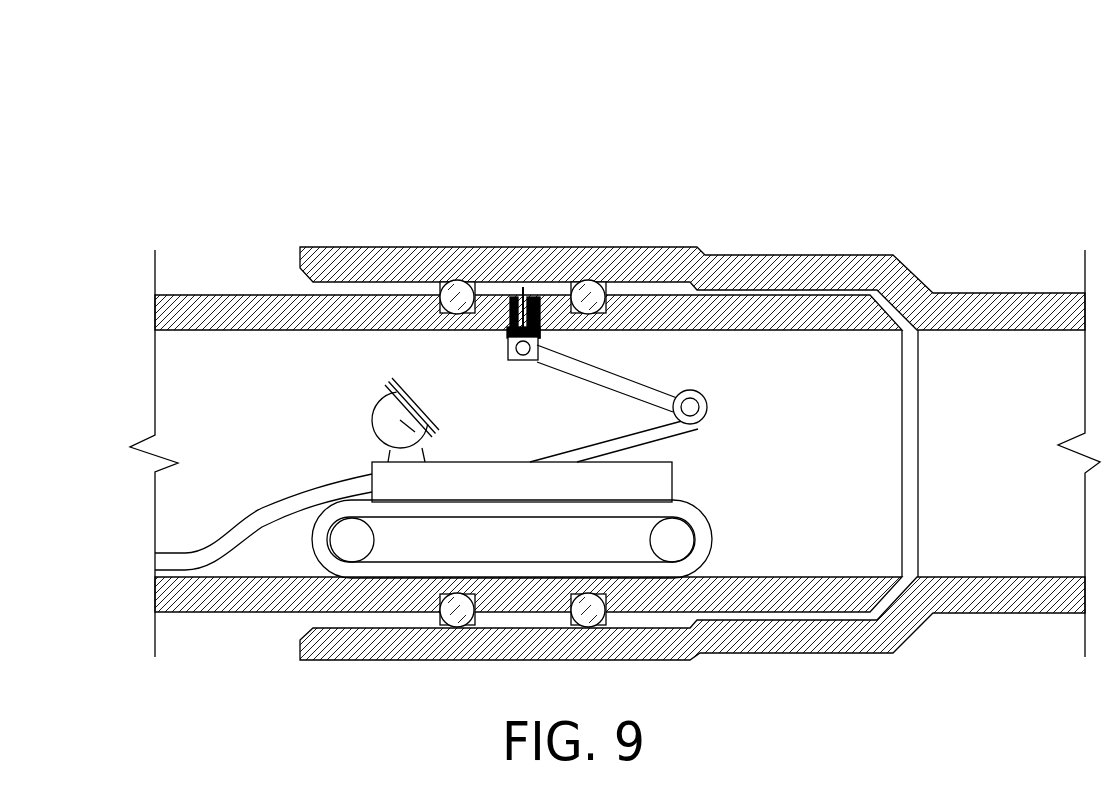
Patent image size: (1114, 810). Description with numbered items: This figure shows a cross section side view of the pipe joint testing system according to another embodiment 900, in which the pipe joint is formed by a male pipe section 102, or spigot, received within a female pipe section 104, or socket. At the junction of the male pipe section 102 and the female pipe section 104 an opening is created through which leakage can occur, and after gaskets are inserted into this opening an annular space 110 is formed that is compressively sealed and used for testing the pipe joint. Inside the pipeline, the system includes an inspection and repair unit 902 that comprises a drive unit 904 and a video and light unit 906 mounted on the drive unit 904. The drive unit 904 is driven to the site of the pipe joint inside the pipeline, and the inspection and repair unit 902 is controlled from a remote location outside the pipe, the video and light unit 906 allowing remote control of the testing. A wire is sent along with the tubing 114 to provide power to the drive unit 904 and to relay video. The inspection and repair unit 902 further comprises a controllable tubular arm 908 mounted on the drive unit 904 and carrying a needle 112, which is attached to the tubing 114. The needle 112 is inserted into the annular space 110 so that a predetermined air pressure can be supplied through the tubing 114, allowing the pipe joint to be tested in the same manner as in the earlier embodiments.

The pipeline inspection system 900 is at (317, 113).
The first pipe section 102 is at (238, 295).
The second pipe section / coupling 104 is at (838, 255).
The sensor 110 is at (560, 287).
The sensor interface module 112 is at (540, 338).
The tether cable 114 is at (200, 548).
The robotic crawler 902 is at (584, 460).
The track drive 904 is at (713, 540).
The antenna dish 906 is at (392, 445).
The articulated arm 908 is at (703, 394).